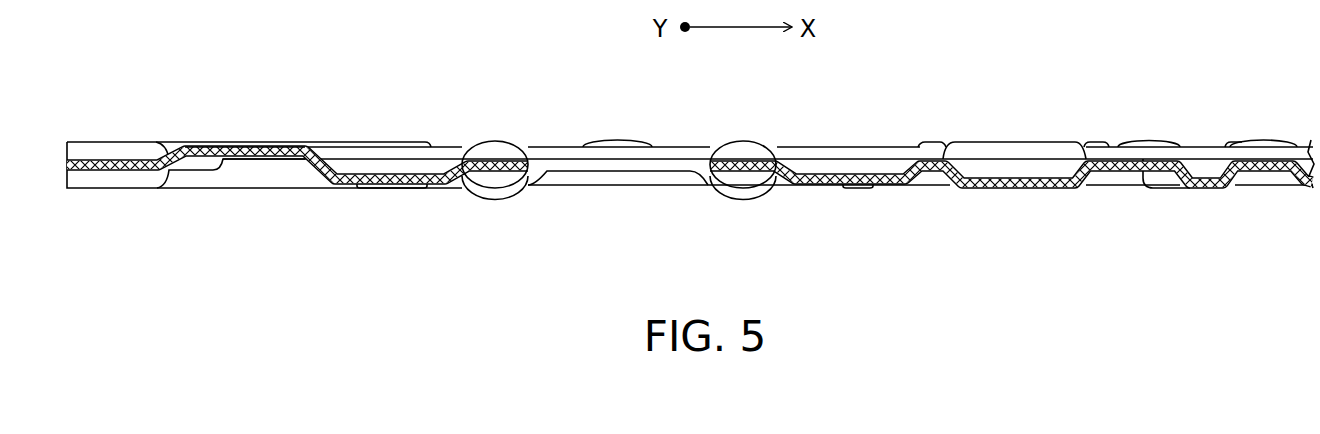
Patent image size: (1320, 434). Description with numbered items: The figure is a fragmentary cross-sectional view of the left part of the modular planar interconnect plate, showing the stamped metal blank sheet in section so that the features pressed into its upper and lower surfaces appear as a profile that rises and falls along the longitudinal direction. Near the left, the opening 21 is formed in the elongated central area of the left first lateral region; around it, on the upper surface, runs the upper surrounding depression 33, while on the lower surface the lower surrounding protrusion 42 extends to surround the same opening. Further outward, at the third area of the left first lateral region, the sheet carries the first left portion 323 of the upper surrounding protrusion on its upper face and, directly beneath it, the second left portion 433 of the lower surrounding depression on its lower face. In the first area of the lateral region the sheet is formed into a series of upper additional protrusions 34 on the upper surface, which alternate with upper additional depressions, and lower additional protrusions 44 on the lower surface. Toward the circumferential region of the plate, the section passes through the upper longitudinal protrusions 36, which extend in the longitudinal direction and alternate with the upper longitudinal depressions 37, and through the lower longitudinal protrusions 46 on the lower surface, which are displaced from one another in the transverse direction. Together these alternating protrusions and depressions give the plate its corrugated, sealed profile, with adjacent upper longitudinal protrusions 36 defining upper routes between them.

The opening 21 is at (623, 167).
The first left portion 323 is at (222, 146).
The upper surrounding depression 33 is at (368, 177).
The upper additional protrusion 34 is at (493, 150).
The upper longitudinal protrusion 36 is at (1033, 150).
The upper longitudinal depression 37 is at (982, 178).
The lower surrounding protrusion 42 is at (356, 187).
The second left portion 433 is at (240, 155).
The lower additional protrusion 44 is at (495, 188).
The lower longitudinal protrusion 46 is at (1017, 188).